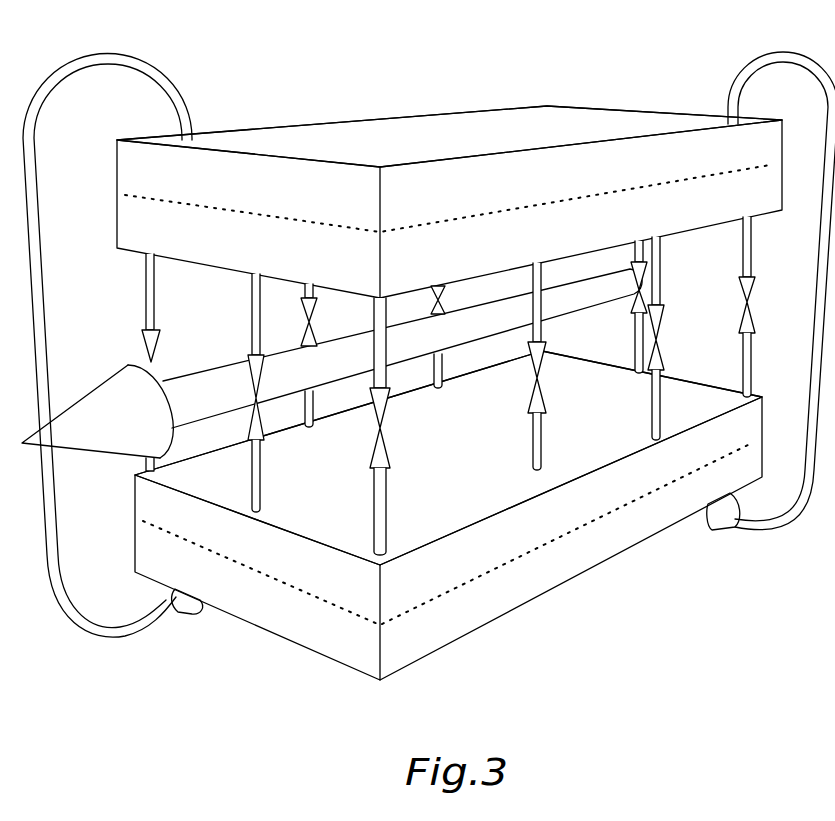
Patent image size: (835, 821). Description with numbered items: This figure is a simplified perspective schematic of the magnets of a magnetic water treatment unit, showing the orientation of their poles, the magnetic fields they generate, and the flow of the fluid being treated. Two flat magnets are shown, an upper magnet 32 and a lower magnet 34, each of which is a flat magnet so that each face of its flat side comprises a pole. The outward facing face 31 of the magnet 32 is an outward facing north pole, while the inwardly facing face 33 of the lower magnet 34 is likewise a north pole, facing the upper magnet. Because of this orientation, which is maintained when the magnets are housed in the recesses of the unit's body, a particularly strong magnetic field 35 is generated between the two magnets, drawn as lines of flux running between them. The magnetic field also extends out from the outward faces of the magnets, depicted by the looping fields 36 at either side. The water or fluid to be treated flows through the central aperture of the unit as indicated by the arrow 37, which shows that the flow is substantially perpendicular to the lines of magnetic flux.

The outward facing face 31 is at (328, 130).
The magnet 32 is at (512, 101).
The inwardly facing face 33 is at (290, 513).
The magnet 34 is at (343, 627).
The magnetic field 35 is at (390, 510).
The field 36 is at (163, 72).
The arrow 37 is at (88, 390).